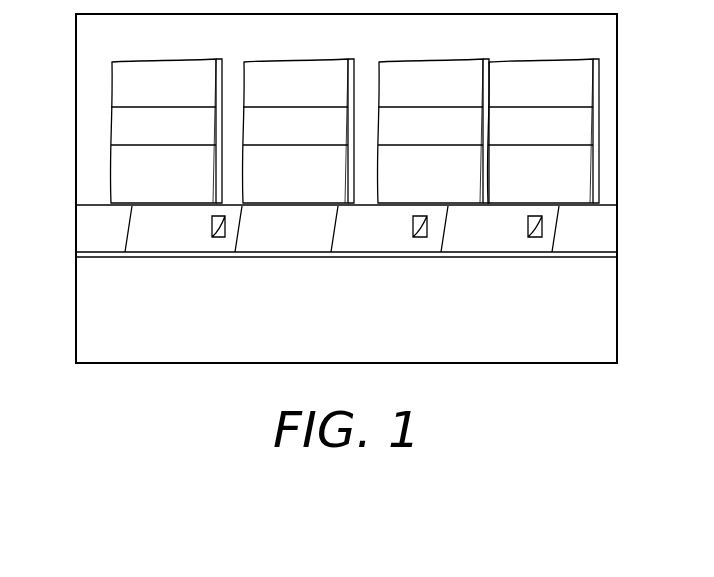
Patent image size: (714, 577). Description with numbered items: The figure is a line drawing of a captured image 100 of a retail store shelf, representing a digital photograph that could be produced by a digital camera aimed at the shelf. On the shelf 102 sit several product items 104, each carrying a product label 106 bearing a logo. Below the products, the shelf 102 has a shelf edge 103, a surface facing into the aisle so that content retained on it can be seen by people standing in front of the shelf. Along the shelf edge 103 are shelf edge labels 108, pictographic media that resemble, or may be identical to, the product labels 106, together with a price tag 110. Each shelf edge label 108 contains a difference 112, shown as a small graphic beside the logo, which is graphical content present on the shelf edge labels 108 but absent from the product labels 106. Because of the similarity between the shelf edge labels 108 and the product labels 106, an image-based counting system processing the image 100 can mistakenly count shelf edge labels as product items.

The captured image 100 is at (617, 90).
The retail store shelf 102 is at (83, 204).
The shelf edge 103 is at (88, 232).
The product items 104 is at (170, 61).
The product labels 106 is at (111, 124).
The shelf edge labels 108 is at (160, 247).
The price tags 110 is at (290, 247).
The difference 112 is at (220, 240).